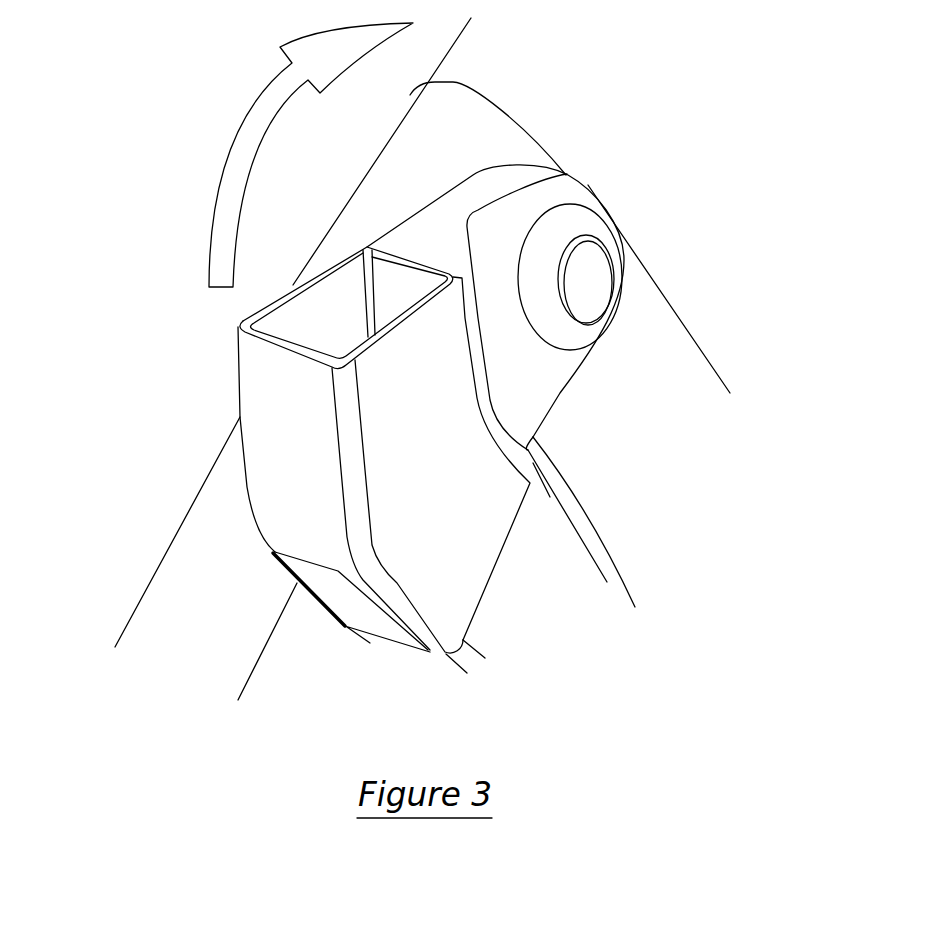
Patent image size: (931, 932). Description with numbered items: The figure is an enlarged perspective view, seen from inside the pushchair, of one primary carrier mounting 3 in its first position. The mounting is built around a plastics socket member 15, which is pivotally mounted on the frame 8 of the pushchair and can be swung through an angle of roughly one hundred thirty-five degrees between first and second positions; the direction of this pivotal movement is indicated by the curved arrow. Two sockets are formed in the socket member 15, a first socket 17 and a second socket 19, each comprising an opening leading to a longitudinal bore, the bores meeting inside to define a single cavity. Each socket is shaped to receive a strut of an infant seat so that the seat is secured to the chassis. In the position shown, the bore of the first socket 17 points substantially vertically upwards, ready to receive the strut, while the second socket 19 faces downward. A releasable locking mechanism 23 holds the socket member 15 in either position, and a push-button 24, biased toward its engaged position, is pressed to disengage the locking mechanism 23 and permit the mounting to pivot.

The primary carrier mounting 3 is at (222, 385).
The frame 8 is at (158, 569).
The socket member 15 is at (237, 328).
The first socket 17 is at (338, 303).
The second socket 19 is at (340, 600).
The releasable locking mechanism 23 is at (640, 290).
The push-button 24 is at (590, 260).